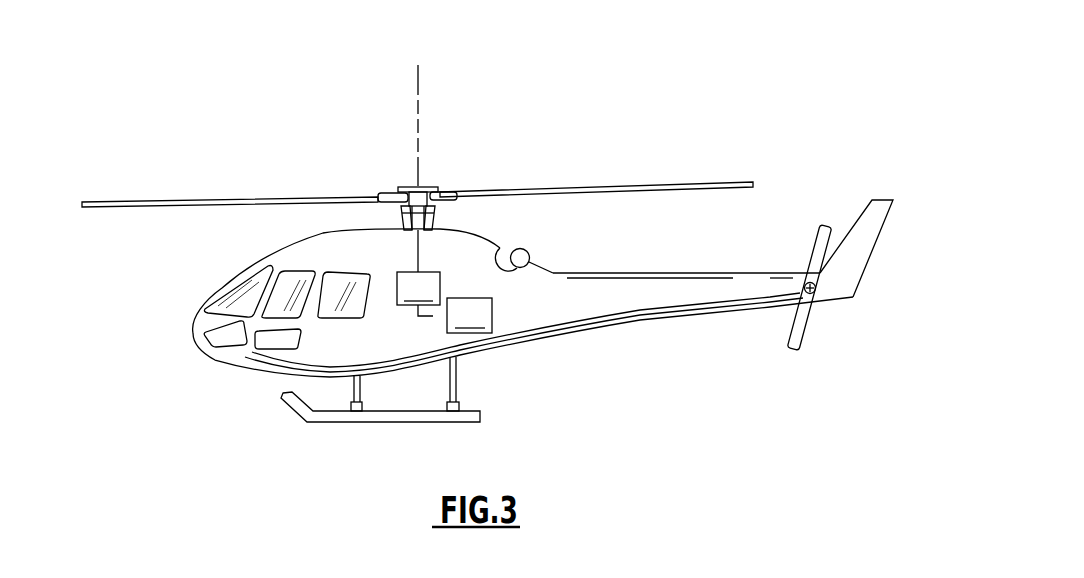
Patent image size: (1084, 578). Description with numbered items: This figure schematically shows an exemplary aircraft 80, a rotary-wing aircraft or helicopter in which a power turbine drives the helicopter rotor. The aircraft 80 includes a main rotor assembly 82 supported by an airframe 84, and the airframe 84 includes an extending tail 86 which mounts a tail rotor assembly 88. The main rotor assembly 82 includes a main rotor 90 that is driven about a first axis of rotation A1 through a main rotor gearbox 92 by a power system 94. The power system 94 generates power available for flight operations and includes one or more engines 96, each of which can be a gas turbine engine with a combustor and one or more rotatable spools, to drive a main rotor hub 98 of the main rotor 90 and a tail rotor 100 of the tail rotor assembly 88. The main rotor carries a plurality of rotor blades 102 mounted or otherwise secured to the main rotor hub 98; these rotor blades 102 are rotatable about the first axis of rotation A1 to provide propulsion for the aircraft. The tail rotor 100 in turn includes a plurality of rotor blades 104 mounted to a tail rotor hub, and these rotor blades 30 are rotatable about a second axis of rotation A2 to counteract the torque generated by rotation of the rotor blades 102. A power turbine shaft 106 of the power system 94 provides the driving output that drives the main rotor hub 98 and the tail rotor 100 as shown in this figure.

The aircraft 80 is at (166, 84).
The main rotor assembly 82 is at (361, 167).
The airframe 84 is at (272, 362).
The extending tail 86 is at (632, 308).
The tail rotor assembly 88 is at (841, 190).
The main rotor 90 is at (434, 187).
The main rotor gearbox 92 is at (418, 267).
The power system 94 is at (460, 284).
The engine 96 is at (469, 315).
The main rotor hub 98 is at (434, 214).
The tail rotor 100 is at (805, 289).
The rotor blades 102 is at (156, 200).
The rotor blades 104 is at (810, 330).
The power turbine shaft 106 is at (428, 316).
The rotor blades 30 is at (817, 229).
The first axis of rotation A1 is at (419, 92).
The second axis of rotation A2 is at (818, 286).